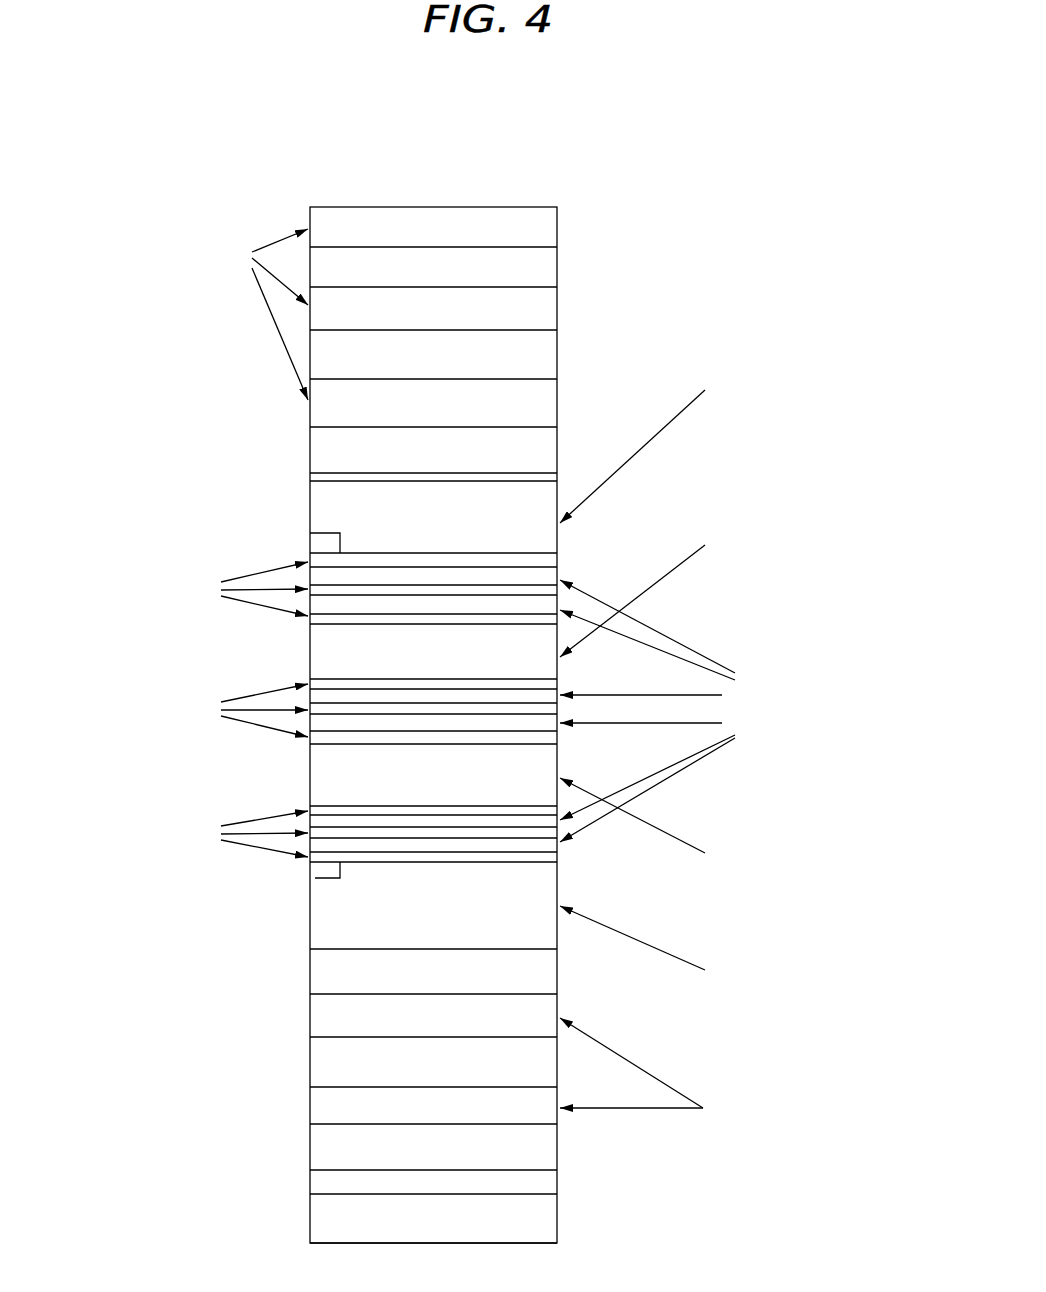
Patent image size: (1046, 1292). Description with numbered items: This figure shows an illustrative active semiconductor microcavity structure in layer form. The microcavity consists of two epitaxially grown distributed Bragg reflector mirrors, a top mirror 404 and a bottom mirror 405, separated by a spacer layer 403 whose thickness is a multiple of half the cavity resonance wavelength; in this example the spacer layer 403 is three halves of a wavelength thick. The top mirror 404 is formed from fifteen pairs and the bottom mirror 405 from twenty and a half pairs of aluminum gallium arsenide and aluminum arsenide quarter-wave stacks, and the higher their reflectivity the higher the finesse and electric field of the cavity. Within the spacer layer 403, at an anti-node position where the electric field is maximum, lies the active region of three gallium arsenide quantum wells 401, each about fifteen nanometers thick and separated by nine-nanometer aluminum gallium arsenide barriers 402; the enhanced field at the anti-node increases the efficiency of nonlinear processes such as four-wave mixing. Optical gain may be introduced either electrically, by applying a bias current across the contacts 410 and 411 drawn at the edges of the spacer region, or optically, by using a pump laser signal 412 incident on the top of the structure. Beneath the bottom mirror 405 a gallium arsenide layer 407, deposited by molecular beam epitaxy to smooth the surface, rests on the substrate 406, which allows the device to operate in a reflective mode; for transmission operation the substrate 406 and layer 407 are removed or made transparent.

The pump laser signal 412 is at (425, 205).
The top Bragg reflector (DBR) mirror 404 is at (278, 203).
The bottom Bragg reflector (DBR) mirror 405 is at (280, 1175).
The spacer layer 403 is at (545, 948).
The quantum wells 401 is at (320, 701).
The barriers 402 is at (733, 711).
The contact 410 is at (313, 543).
The contact 411 is at (313, 871).
The GaAs layer 407 is at (558, 1181).
The substrate 406 is at (558, 1218).